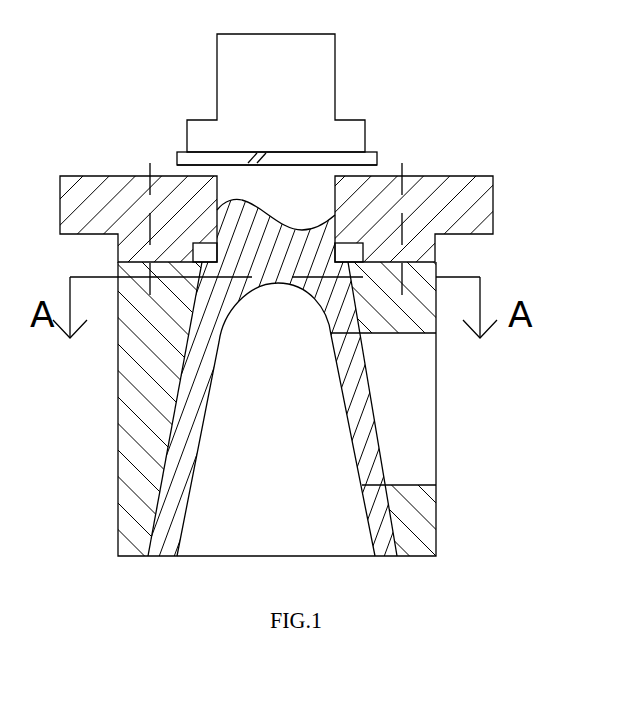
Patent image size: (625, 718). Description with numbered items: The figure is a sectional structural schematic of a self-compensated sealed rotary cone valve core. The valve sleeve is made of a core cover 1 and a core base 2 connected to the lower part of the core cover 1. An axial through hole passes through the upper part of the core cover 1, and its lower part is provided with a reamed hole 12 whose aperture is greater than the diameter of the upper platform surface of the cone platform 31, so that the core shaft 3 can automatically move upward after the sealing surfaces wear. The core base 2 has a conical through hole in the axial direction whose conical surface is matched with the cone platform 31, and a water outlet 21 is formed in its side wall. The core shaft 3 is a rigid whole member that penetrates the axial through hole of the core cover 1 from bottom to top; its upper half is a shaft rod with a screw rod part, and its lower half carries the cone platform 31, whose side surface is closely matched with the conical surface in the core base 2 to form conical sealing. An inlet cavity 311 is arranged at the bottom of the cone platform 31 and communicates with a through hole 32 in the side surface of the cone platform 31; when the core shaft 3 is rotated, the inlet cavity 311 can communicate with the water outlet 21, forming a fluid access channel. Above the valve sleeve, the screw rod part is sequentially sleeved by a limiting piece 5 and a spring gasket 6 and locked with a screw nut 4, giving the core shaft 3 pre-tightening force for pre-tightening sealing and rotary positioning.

The core cover 1 is at (477, 193).
The reamed hole 12 is at (350, 252).
The core base 2 is at (142, 400).
The water outlet 21 is at (415, 428).
The core shaft 3 is at (282, 250).
The cone platform 31 is at (202, 364).
The through hole 32 is at (360, 383).
The inlet cavity 311 is at (237, 477).
The screw nut 4 is at (348, 138).
The limiting piece 5 is at (212, 168).
The spring gasket 6 is at (218, 158).